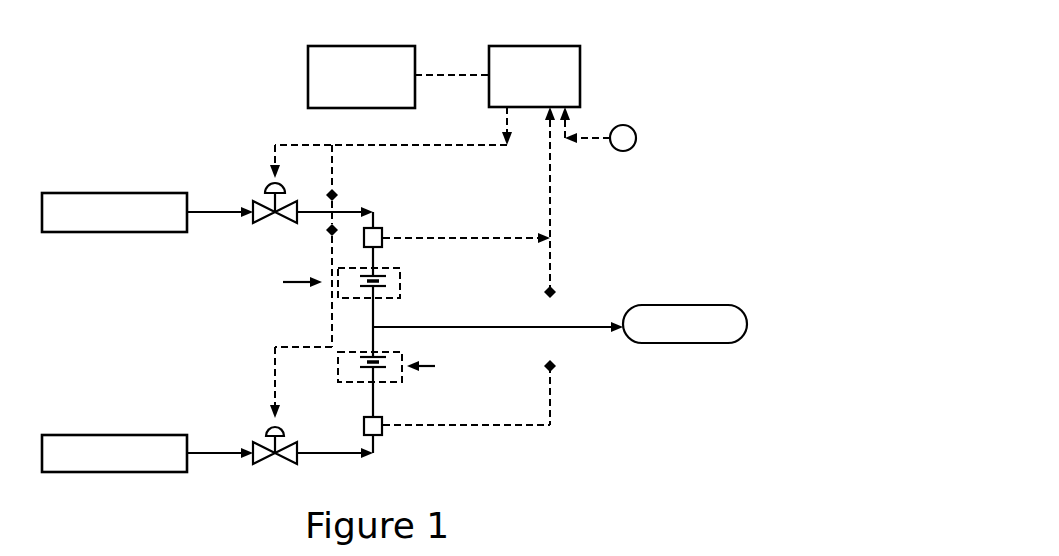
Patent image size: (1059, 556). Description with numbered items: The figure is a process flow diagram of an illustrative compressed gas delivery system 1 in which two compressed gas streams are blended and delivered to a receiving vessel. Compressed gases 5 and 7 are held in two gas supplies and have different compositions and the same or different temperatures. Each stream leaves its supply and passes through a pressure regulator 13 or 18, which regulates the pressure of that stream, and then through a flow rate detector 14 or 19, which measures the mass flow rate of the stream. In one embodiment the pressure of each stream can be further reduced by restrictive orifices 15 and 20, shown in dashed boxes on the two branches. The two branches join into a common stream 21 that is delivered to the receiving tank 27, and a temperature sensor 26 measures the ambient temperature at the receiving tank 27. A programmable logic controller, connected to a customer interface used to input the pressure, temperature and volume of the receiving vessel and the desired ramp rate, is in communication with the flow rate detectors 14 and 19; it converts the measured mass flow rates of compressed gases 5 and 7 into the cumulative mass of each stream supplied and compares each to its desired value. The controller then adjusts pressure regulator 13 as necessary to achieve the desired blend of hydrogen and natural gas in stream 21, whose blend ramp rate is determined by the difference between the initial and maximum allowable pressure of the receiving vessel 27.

The compressed gas delivery system 1 is at (645, 57).
The compressed gas 5 is at (92, 233).
The compressed gas 7 is at (108, 473).
The pressure regulator 13 is at (286, 225).
The flow rate detector 14 is at (383, 247).
The restrictive orifice 15 is at (400, 283).
The pressure regulator 18 is at (264, 462).
The flow rate detector 19 is at (364, 425).
The restrictive orifice 20 is at (385, 352).
The blended stream 21 is at (490, 326).
The temperature sensor 26 is at (636, 138).
The receiving tank 27 is at (695, 343).